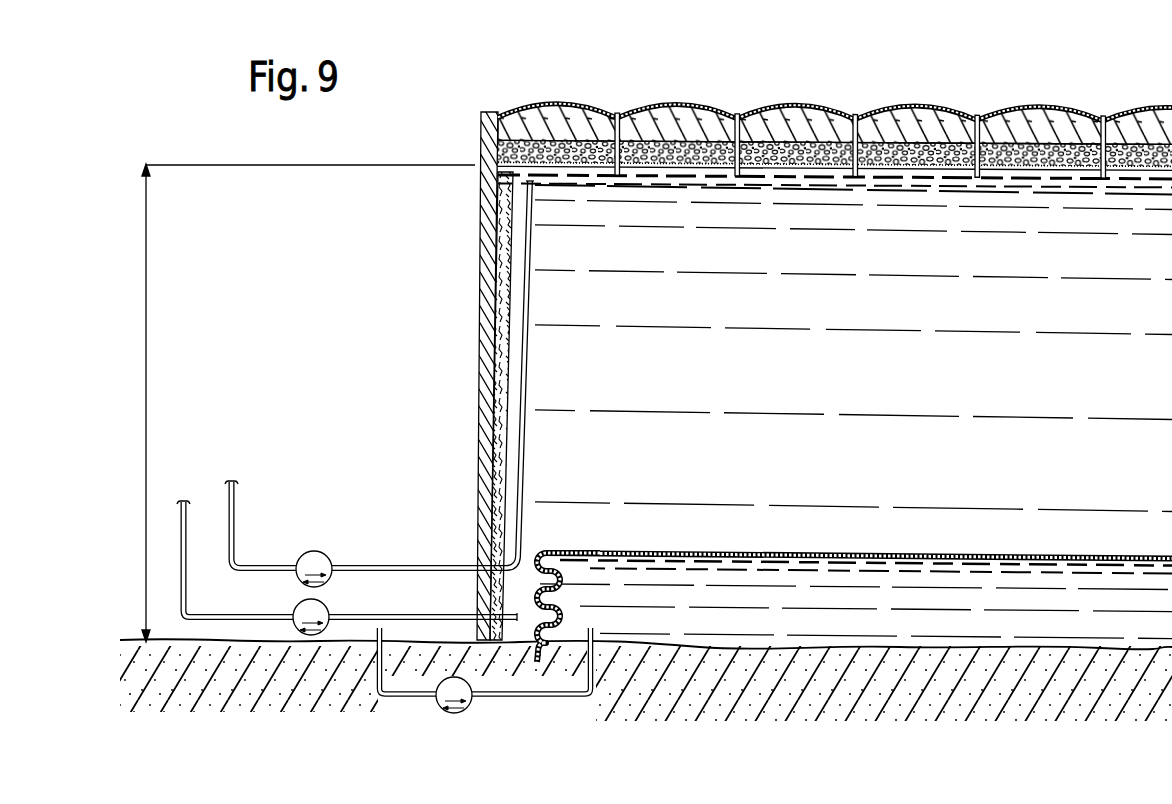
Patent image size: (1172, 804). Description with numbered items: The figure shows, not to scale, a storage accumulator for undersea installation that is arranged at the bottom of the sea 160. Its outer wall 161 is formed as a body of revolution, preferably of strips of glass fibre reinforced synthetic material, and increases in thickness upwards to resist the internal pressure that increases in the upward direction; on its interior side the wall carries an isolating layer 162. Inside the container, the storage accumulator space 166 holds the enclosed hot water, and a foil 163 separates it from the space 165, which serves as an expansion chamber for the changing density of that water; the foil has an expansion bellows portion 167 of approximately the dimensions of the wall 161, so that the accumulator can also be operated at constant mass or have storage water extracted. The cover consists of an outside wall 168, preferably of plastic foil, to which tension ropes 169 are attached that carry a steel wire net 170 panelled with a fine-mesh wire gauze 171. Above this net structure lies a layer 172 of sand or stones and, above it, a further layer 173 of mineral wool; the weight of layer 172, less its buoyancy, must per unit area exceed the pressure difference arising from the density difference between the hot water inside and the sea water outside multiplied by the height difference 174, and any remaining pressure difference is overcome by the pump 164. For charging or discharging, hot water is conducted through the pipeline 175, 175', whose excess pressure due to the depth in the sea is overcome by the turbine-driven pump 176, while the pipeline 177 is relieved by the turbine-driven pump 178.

The bottom of the sea 160 is at (781, 636).
The outer wall 161 is at (480, 268).
The isolating layer 162 is at (506, 372).
The foil 163 is at (828, 553).
The pump 164 is at (467, 708).
The space 165 is at (856, 599).
The storage accumulator space 166 is at (853, 348).
The expansion bellows portion 167 is at (566, 583).
The outside wall 168 is at (683, 103).
The tension ropes 169 is at (743, 135).
The steel wire net 170 is at (963, 172).
The fine-mesh wire gauze 171 is at (584, 160).
The layer of sand or stones 172 is at (785, 157).
The layer of mineral wool 173 is at (914, 128).
The height difference 174 is at (148, 362).
The pipeline 175 is at (383, 374).
The pipeline 175' is at (257, 489).
The turbine-driven pump 176 is at (302, 556).
The pipeline 177 is at (400, 616).
The turbine-driven pump 178 is at (299, 611).